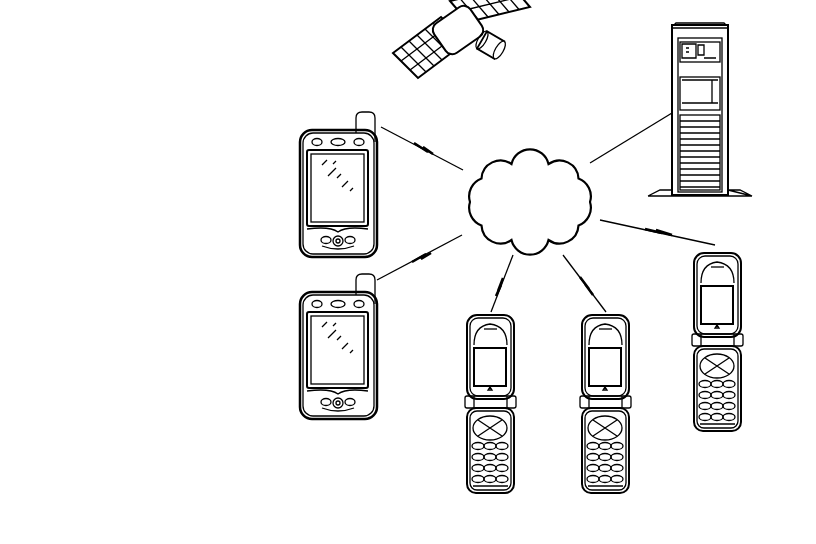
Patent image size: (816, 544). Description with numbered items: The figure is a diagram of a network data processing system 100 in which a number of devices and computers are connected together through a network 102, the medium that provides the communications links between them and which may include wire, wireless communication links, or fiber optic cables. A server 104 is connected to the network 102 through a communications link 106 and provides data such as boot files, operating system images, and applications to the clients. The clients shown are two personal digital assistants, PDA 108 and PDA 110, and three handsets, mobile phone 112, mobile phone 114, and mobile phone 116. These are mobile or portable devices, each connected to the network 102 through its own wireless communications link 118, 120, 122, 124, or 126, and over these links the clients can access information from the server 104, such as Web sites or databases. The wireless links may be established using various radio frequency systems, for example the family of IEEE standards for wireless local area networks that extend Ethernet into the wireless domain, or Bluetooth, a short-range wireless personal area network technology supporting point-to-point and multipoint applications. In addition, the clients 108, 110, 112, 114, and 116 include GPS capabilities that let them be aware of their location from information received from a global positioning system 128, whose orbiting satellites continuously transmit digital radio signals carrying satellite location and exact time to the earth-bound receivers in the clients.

The network data processing system 100 is at (304, 88).
The network 102 is at (502, 158).
The server 104 is at (730, 110).
The communications link 106 is at (625, 141).
The PDA 108 is at (300, 186).
The PDA 110 is at (300, 352).
The mobile phone 112 is at (465, 403).
The mobile phone 114 is at (606, 493).
The mobile phone 116 is at (716, 431).
The wireless communications link 118 is at (410, 142).
The wireless communications link 120 is at (440, 247).
The wireless communications link 122 is at (498, 292).
The wireless communications link 124 is at (597, 300).
The wireless communications link 126 is at (627, 226).
The global positioning system 128 is at (496, 52).